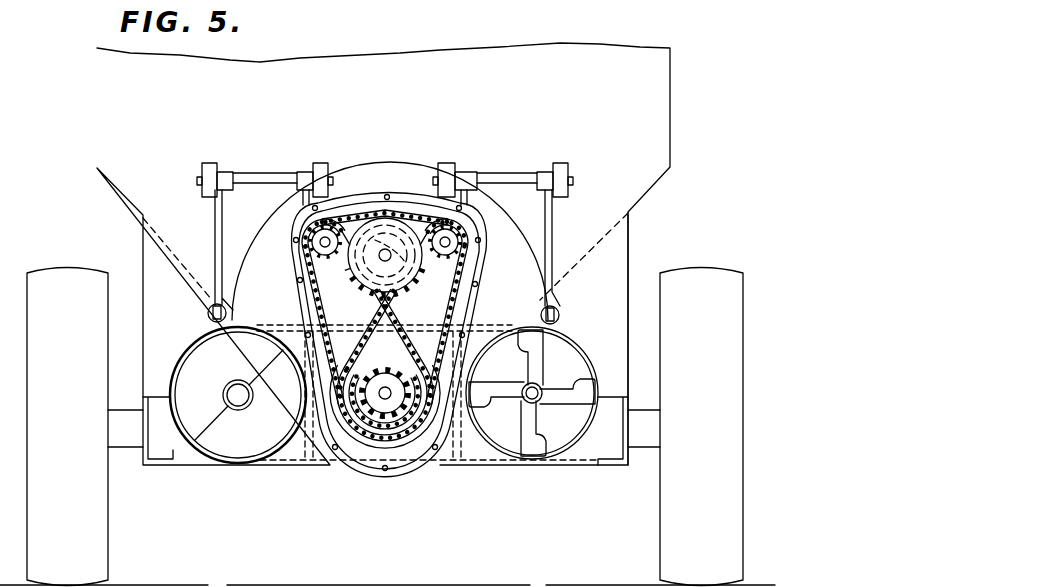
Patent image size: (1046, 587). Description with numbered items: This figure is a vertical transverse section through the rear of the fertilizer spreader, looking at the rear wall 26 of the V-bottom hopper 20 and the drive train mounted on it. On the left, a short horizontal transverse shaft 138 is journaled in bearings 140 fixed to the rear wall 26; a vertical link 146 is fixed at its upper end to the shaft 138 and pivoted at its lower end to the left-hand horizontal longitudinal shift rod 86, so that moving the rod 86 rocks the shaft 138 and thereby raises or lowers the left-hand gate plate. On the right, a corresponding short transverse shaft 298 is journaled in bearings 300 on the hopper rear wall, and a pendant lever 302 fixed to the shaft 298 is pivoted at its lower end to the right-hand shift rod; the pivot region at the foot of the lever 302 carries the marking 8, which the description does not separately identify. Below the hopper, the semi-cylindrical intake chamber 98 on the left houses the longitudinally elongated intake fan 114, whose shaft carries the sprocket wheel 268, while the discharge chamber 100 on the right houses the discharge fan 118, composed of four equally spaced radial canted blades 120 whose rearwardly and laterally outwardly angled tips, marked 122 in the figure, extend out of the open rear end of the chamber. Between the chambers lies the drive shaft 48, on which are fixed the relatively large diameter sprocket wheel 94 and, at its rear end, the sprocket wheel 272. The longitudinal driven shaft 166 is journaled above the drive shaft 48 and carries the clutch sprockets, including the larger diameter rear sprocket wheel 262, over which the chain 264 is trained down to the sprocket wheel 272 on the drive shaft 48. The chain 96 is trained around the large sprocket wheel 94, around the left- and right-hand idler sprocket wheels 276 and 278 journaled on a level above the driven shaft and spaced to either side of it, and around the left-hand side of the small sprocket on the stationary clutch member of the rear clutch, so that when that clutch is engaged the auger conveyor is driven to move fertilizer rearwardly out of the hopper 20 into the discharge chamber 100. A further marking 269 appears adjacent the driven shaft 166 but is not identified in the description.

The V-bottom hopper 20 is at (672, 100).
The rear wall of the hopper 26 is at (655, 142).
The bearings 140 is at (215, 157).
The left-hand shaft 138 is at (262, 172).
The vertical link 146 is at (214, 233).
The left-hand shift rod 86 is at (207, 311).
The bearings 300 is at (448, 163).
The right-hand shaft 298 is at (503, 176).
The pendant lever 302 is at (553, 232).
The pivot 8 is at (560, 307).
The chain 96 is at (303, 314).
The driven shaft 166 is at (385, 248).
The clutch member 269 is at (400, 264).
The left-hand idler sprocket wheel 276 is at (318, 253).
The right-hand idler sprocket wheel 278 is at (458, 241).
The sprocket wheel 272 is at (372, 405).
The rear sprocket wheel 262 is at (426, 288).
The chain 264 is at (420, 313).
The sprocket wheel 94 is at (416, 410).
The drive shaft 48 is at (383, 399).
The intake chamber 98 is at (178, 355).
The sprocket wheel 268 is at (240, 361).
The fan 114 is at (247, 405).
The discharge chamber 100 is at (565, 330).
The discharge fan 118 is at (553, 367).
The radial canted blades 120 is at (512, 397).
The fan blade 122 is at (538, 452).